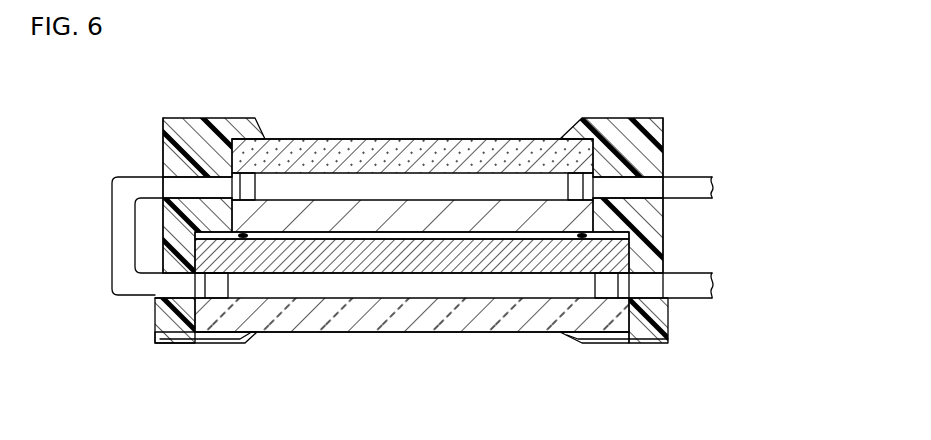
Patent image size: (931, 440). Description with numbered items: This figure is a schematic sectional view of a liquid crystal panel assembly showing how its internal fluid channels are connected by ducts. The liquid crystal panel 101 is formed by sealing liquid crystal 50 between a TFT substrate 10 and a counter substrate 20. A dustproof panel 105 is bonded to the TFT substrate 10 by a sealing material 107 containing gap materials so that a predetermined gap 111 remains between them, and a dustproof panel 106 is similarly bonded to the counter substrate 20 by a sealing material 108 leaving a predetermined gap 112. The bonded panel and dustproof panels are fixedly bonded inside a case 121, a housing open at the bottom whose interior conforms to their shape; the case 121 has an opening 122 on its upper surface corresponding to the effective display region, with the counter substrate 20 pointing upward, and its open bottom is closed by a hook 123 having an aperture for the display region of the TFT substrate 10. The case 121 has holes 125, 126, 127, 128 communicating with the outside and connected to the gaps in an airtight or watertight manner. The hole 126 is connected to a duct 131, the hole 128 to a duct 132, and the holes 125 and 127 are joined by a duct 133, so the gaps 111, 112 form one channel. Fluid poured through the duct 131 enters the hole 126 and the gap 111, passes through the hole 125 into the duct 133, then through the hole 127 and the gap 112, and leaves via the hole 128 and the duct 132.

The TFT substrate 10 is at (363, 268).
The counter substrate 20 is at (410, 207).
The liquid crystal 50 is at (443, 233).
The liquid crystal panel 101 is at (431, 284).
The dustproof panel 105 is at (507, 331).
The dustproof panel 106 is at (502, 140).
The sealing material 107 is at (595, 290).
The sealing material 108 is at (568, 186).
The gap 111 is at (296, 288).
The gap 112 is at (345, 183).
The case 121 is at (627, 118).
The opening 122 is at (257, 137).
The hook 123 is at (185, 345).
The hole 125 is at (181, 276).
The hole 126 is at (646, 292).
The hole 127 is at (193, 178).
The hole 128 is at (678, 176).
The duct 131 is at (713, 270).
The duct 132 is at (705, 199).
The duct 133 is at (148, 300).